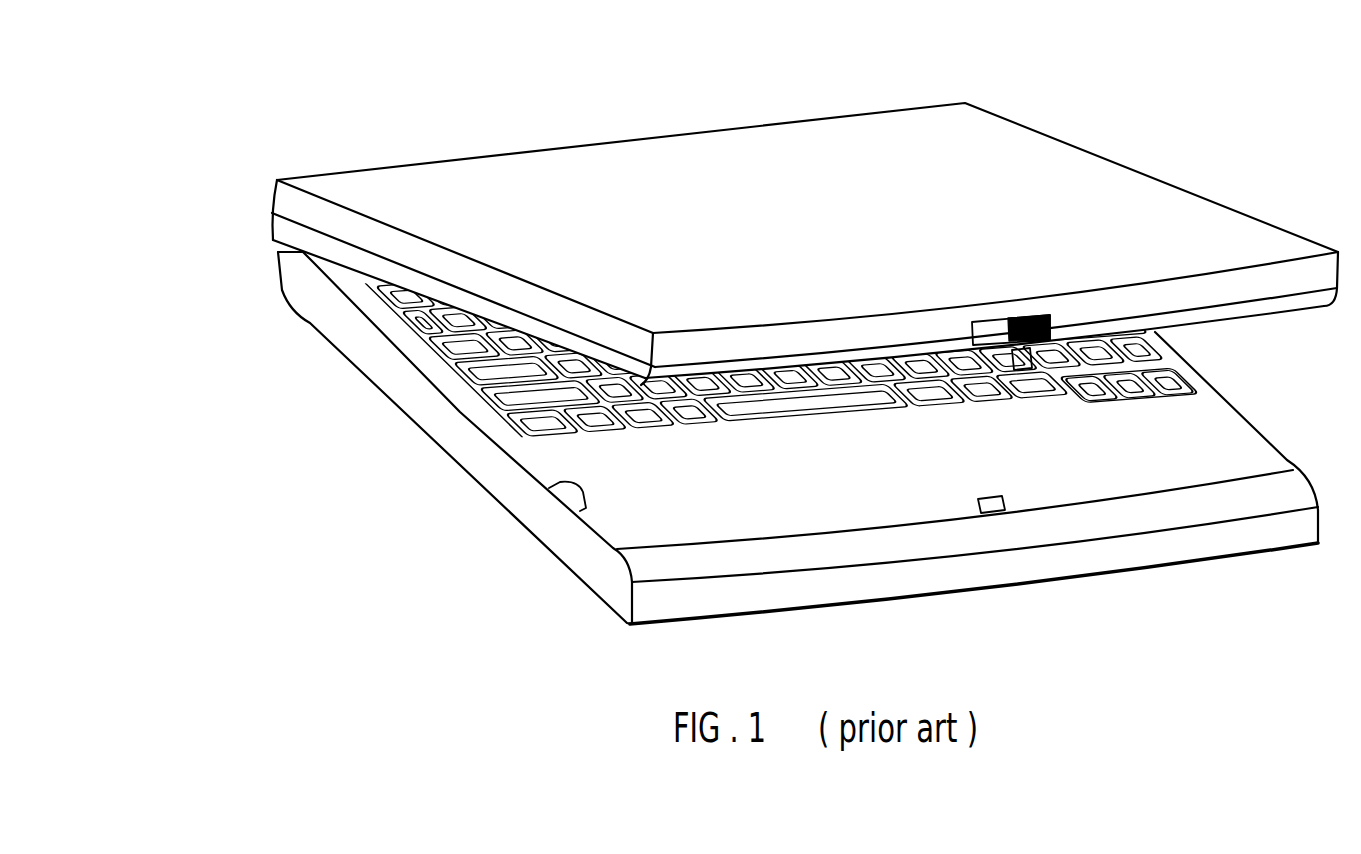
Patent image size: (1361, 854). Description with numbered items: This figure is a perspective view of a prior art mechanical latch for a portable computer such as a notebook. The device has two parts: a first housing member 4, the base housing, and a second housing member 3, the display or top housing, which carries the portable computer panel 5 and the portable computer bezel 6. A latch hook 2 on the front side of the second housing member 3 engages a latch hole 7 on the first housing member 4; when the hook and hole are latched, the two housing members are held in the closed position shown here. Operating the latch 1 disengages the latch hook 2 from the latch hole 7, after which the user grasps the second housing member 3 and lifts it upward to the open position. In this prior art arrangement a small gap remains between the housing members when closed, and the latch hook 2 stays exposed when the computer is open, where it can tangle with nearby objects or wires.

The latch 1 is at (1035, 320).
The latch hook 2 is at (1090, 337).
The second housing member 3 is at (705, 208).
The first housing member 4 is at (505, 490).
The portable computer panel 5 is at (290, 198).
The portable computer bezel 6 is at (288, 233).
The latch hole 7 is at (995, 513).